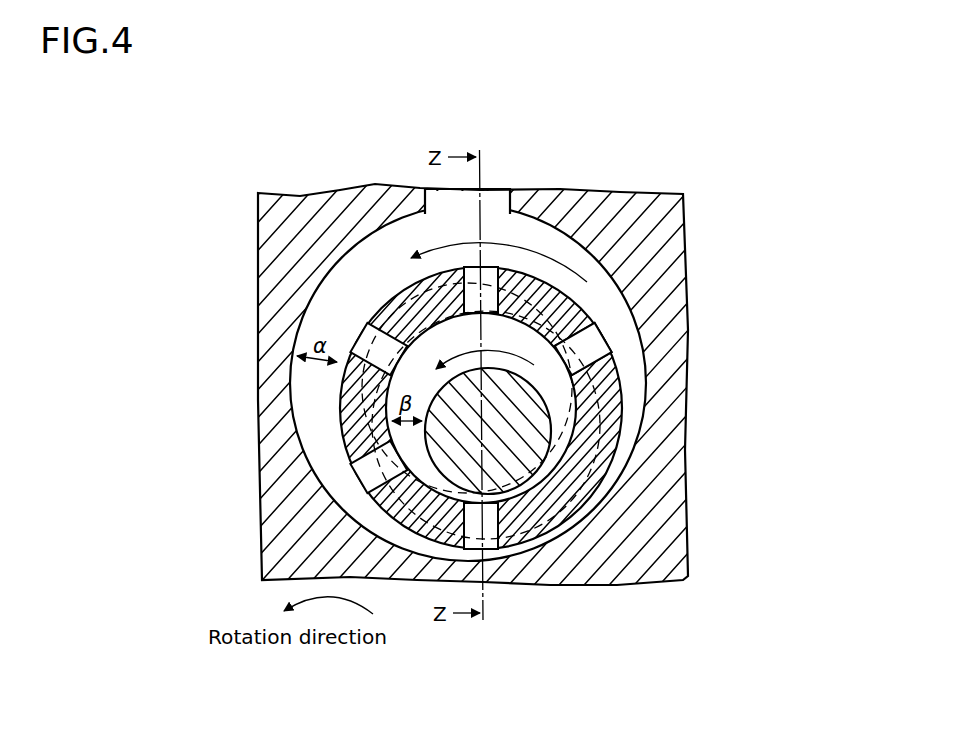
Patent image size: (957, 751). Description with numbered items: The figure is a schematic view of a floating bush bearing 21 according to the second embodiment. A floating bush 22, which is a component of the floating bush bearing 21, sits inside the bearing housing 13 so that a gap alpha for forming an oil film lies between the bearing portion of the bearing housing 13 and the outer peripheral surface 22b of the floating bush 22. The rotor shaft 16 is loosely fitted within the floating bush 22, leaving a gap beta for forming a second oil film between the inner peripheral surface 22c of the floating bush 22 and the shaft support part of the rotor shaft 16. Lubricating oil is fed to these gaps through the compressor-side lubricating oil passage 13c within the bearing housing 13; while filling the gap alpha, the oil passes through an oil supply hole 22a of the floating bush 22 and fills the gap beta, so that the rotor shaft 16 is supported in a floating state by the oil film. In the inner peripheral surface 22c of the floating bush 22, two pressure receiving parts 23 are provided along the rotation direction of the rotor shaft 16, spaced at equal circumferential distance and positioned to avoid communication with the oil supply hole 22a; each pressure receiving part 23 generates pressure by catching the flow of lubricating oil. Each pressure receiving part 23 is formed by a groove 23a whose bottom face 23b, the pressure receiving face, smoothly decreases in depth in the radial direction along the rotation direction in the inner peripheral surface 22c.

The bearing housing 13 is at (610, 256).
The compressor-side lubricating oil passage 13c is at (496, 203).
The rotor shaft 16 is at (526, 388).
The floating bush bearing 21 is at (563, 126).
The floating bush 22 is at (403, 322).
The oil supply hole 22a is at (593, 338).
The outer peripheral surface 22b is at (512, 548).
The inner peripheral surface 22c is at (432, 478).
The pressure receiving part 23 is at (610, 418).
The groove 23a is at (598, 433).
The bottom face 23b is at (580, 500).